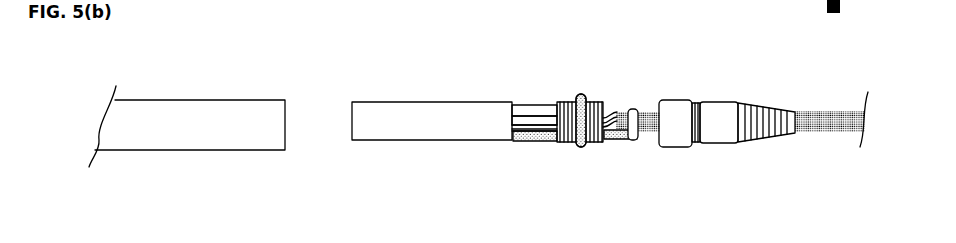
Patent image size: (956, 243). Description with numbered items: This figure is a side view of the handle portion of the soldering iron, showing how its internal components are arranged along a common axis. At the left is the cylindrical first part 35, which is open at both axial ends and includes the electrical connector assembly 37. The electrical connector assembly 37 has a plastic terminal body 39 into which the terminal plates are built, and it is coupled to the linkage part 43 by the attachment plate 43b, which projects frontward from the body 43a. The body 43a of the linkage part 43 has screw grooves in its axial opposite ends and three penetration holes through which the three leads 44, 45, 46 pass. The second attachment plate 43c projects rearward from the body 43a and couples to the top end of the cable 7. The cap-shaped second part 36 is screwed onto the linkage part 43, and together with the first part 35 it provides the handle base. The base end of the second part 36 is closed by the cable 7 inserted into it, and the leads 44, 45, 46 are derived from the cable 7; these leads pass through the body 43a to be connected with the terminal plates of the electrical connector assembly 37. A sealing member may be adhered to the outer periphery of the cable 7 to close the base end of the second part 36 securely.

The first part 35 is at (199, 124).
The electrical connector assembly 37 is at (438, 96).
The terminal body 39 is at (397, 122).
The lead 44 is at (521, 105).
The lead 45 is at (543, 115).
The lead 46 is at (521, 132).
The linkage part 43 is at (577, 164).
The body 43a is at (583, 146).
The attachment plate 43b is at (538, 142).
The attachment plate 43c is at (622, 150).
The second part 36 is at (720, 134).
The cable 7 is at (827, 133).